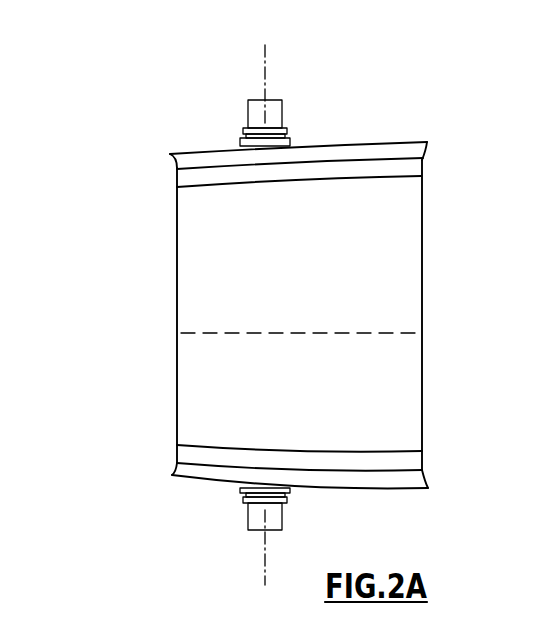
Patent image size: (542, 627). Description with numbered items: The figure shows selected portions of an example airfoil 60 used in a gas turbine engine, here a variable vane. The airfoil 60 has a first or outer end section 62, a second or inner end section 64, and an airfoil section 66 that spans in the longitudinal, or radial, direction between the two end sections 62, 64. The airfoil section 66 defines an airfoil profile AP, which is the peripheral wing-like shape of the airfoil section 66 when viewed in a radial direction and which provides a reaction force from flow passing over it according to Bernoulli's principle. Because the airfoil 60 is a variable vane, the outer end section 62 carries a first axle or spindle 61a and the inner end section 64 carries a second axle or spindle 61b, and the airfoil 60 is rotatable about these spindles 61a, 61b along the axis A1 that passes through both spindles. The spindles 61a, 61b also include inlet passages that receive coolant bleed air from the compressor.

The airfoil 60 is at (264, 318).
The first axle or spindle 61a is at (294, 109).
The second axle or spindle 61b is at (237, 523).
The first or outer end section 62 is at (424, 149).
The second or inner end section 64 is at (417, 482).
The airfoil section 66 is at (194, 273).
The airfoil profile AP is at (385, 333).
The axis A1 is at (266, 68).